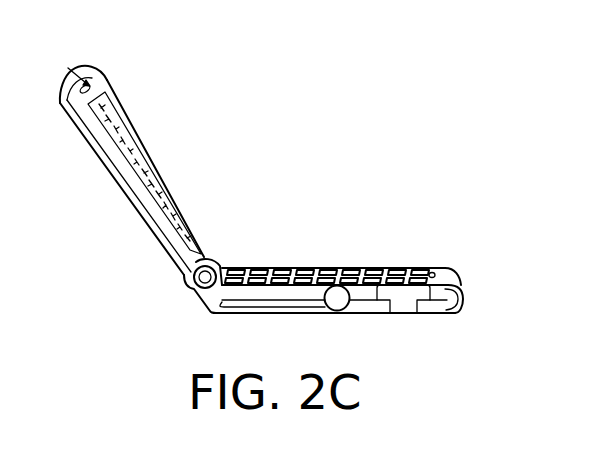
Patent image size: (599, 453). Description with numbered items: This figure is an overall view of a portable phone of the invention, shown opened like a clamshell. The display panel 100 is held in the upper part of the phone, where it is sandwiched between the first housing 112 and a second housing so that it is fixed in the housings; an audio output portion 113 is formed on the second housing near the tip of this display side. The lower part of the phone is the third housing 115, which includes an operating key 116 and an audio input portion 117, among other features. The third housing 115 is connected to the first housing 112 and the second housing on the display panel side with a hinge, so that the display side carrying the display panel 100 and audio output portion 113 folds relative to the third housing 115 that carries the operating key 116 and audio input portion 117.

The display panel 100 is at (121, 110).
The first housing 112 is at (146, 222).
The audio output portion 113 is at (88, 74).
The third housing 115 is at (350, 308).
The operating key 116 is at (368, 268).
The audio input portion 117 is at (428, 272).